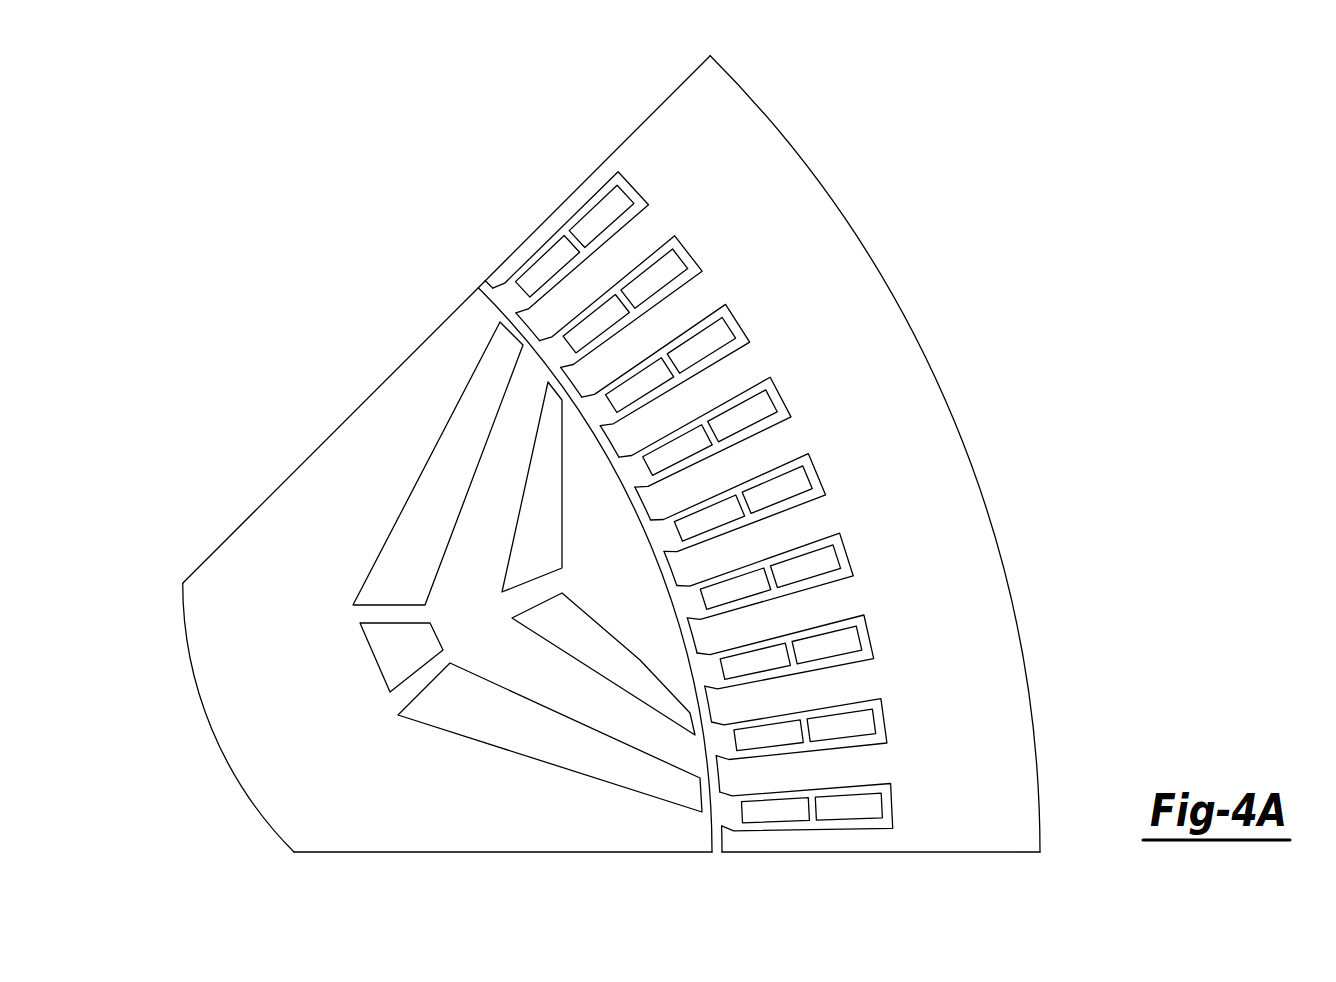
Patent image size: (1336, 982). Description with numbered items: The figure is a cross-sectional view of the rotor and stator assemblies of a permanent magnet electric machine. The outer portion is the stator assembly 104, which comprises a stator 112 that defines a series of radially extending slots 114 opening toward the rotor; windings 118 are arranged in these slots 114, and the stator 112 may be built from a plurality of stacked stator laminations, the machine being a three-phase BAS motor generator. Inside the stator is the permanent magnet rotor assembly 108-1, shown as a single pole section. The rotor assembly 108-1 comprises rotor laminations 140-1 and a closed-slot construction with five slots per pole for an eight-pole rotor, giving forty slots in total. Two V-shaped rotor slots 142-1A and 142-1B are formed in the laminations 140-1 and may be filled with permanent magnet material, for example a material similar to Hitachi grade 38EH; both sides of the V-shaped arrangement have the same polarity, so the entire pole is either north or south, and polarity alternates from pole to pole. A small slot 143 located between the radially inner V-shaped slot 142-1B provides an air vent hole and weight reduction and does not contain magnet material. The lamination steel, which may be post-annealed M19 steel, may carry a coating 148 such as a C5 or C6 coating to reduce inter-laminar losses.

The stator assembly 104 is at (900, 266).
The stator 112 is at (773, 227).
The slots 114 is at (514, 299).
The windings 118 is at (602, 210).
The permanent magnet rotor assembly 108-1 is at (288, 412).
The coating 148 is at (281, 596).
The rotor laminations 140-1 is at (358, 785).
The radially inner V-shaped rotor slot 142-1B is at (403, 582).
The V-shaped rotor slot 142-1A is at (518, 550).
The small slot 143 is at (413, 659).